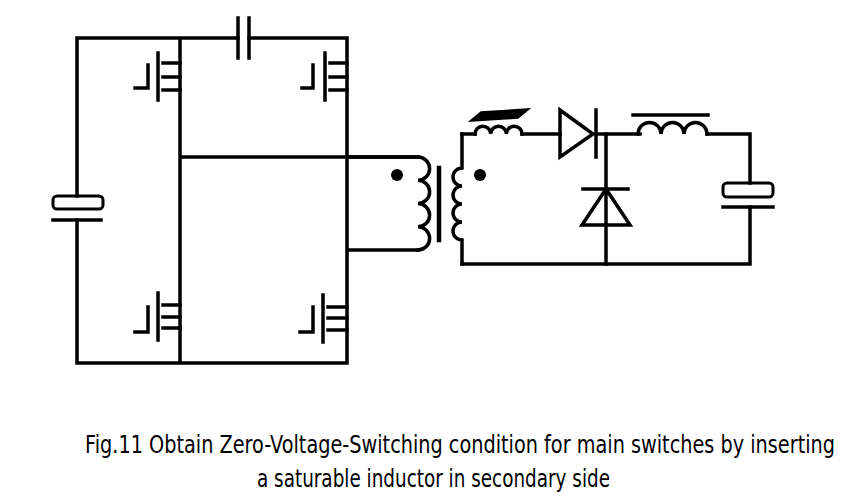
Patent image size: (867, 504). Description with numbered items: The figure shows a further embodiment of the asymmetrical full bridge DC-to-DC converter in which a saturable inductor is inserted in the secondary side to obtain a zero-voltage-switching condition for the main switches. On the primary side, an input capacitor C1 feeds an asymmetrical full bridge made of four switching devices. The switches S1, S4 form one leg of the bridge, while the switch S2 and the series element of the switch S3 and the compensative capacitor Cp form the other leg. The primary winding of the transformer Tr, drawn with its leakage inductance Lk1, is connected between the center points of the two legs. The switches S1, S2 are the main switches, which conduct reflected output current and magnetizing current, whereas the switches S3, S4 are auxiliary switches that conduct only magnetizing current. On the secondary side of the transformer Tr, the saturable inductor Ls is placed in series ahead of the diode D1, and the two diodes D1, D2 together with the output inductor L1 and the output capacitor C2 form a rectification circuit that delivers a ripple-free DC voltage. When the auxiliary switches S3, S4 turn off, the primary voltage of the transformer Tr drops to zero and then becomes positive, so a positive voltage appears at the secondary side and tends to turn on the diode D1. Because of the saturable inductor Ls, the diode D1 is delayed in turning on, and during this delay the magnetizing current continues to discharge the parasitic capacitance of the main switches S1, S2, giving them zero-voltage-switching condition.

The first switching device S1 is at (149, 97).
The second switching device S2 is at (303, 308).
The third switching device S3 is at (317, 97).
The fourth switching device S4 is at (140, 304).
The compensative capacitor Cp is at (242, 58).
The input capacitor C1 is at (61, 232).
The output capacitor C2 is at (771, 220).
The leakage inductance Lk1 is at (335, 187).
The transformer Tr is at (438, 227).
The saturable inductor Ls is at (494, 104).
The diode D1 is at (582, 114).
The diode D2 is at (578, 199).
The output inductor L1 is at (670, 111).